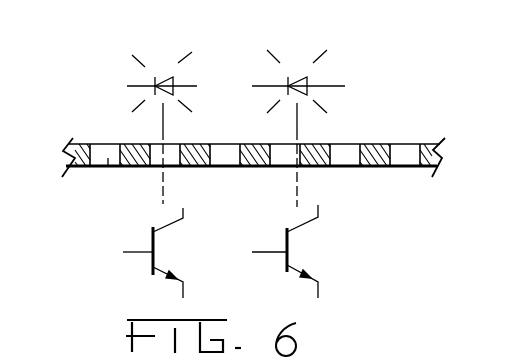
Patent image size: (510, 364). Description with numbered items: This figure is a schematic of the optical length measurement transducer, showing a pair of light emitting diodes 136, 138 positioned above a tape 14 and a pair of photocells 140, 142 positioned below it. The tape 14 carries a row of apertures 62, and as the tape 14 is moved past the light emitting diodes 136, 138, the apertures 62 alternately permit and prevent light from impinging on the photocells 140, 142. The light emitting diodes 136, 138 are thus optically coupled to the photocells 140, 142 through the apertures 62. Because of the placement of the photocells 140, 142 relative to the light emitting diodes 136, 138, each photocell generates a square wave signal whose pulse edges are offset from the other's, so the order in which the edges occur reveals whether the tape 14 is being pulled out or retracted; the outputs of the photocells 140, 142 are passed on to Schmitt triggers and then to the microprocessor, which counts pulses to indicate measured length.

The tape 14 is at (103, 144).
The apertures 62 is at (155, 167).
The light emitting diode 136 is at (168, 78).
The light emitting diode 138 is at (303, 78).
The photocell 140 is at (182, 232).
The photocell 142 is at (310, 224).